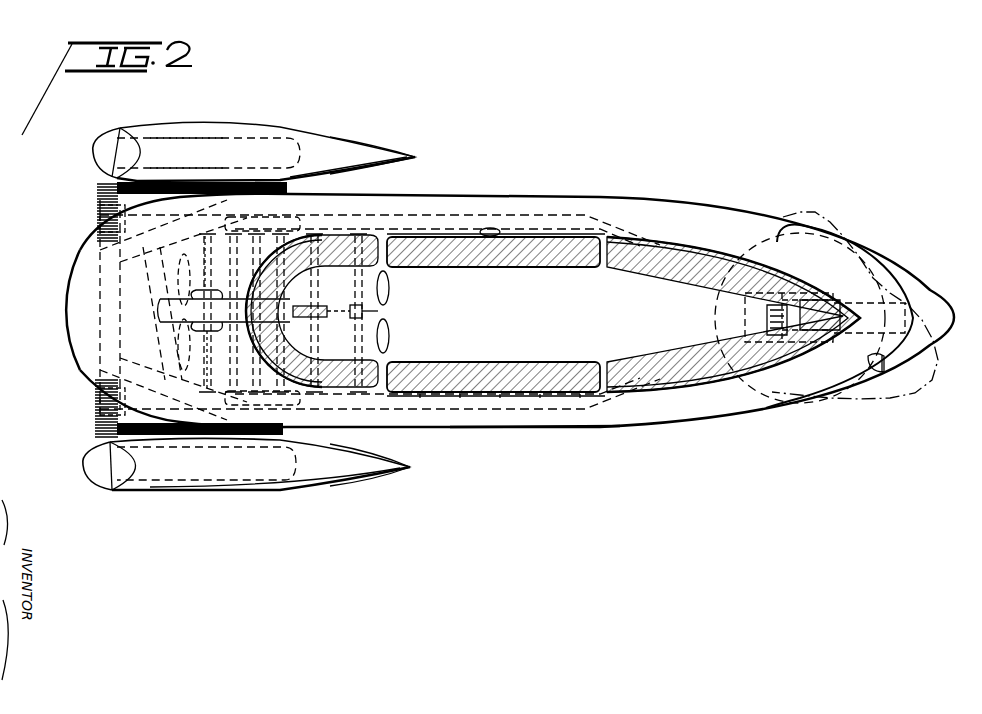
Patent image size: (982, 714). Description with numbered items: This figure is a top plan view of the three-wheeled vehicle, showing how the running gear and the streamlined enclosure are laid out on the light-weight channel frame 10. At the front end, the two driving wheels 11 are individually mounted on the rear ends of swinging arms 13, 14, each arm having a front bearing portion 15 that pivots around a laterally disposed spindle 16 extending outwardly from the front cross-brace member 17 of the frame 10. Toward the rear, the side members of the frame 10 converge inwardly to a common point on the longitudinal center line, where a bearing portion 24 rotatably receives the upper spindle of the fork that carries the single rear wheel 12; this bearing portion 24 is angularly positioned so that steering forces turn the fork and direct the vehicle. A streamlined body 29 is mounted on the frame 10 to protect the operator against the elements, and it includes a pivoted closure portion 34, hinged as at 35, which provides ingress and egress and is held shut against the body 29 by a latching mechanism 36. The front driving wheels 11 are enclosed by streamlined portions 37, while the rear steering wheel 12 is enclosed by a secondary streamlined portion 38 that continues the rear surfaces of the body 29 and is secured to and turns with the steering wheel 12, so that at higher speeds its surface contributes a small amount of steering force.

The frame 10 is at (425, 214).
The front driving wheels 11 is at (233, 147).
The rear wheel 12 is at (880, 278).
The swinging arm 13 is at (165, 163).
The swinging arm 14 is at (107, 353).
The front bearing portion 15 is at (97, 203).
The spindles 16 is at (100, 223).
The front cross-brace member 17 is at (117, 272).
The bearing portion 24 is at (817, 403).
The body 29 is at (570, 425).
The closure portion 34 is at (553, 313).
The hinge 35 is at (505, 396).
The latching mechanism 36 is at (497, 230).
The streamlined portions 37 is at (333, 145).
The secondary streamlined portion 38 is at (913, 292).